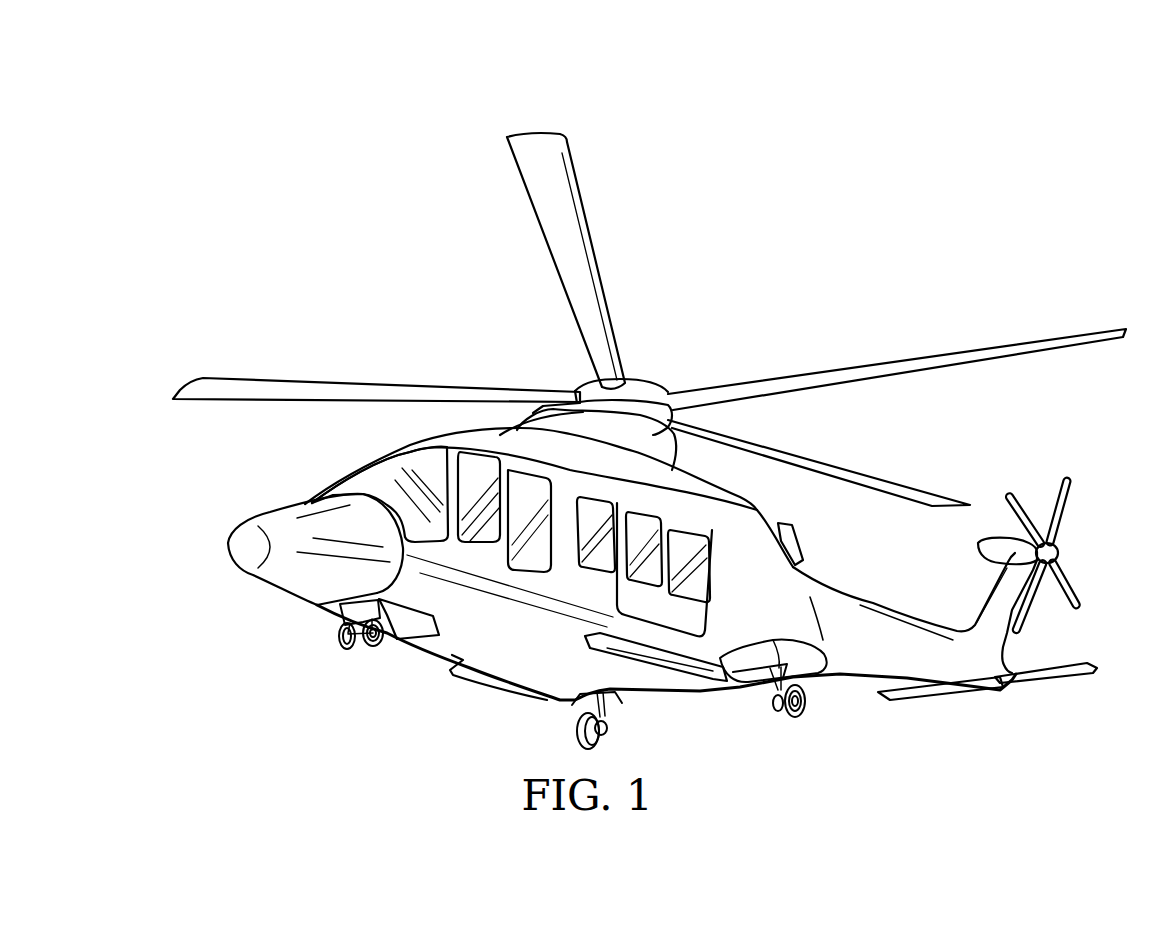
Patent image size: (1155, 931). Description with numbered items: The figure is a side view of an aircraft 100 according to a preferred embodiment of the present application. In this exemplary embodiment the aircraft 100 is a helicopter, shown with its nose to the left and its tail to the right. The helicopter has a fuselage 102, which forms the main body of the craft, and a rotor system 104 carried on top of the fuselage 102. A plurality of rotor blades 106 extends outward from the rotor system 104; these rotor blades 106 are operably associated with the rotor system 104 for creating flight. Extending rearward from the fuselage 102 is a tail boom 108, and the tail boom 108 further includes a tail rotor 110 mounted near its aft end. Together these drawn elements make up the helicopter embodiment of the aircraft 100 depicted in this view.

The aircraft 100 is at (316, 114).
The fuselage 102 is at (448, 645).
The rotor system 104 is at (664, 350).
The rotor blades 106 is at (883, 375).
The tail boom 108 is at (857, 668).
The tail rotor 110 is at (1060, 523).